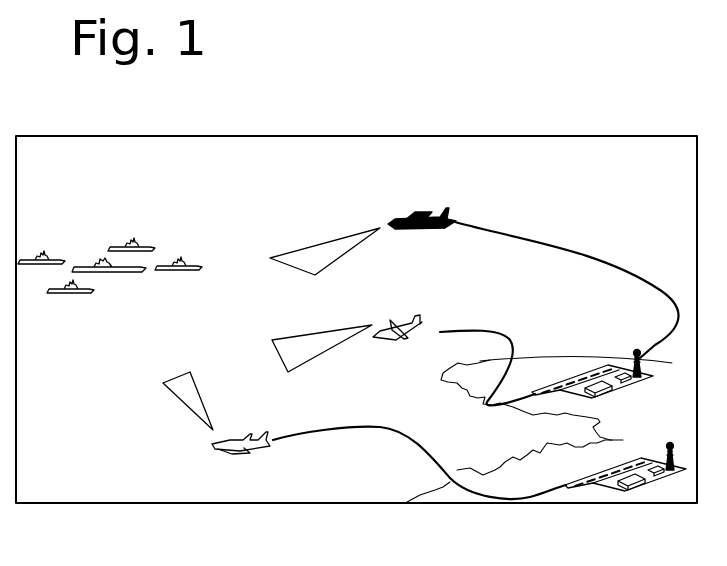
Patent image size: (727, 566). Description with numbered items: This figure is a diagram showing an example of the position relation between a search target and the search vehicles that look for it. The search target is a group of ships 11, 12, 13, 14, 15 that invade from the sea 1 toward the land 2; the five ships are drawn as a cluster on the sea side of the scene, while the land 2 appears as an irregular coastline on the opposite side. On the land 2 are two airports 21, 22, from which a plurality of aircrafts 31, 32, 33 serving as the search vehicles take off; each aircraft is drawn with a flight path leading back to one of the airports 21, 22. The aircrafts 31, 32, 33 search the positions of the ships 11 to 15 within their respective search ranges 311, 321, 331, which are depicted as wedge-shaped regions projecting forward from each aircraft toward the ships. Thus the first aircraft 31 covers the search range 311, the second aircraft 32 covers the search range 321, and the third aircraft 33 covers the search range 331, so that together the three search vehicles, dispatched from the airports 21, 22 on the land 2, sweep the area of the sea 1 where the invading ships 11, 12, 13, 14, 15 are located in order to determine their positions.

The sea 1 is at (293, 497).
The land 2 is at (450, 497).
The ship 11 is at (128, 274).
The ship 12 is at (150, 246).
The ship 13 is at (192, 273).
The ship 14 is at (80, 294).
The ship 15 is at (61, 261).
The airport 21 is at (604, 491).
The airport 22 is at (566, 380).
The aircraft 31 is at (218, 453).
The aircraft 32 is at (389, 342).
The aircraft 33 is at (440, 213).
The search range 311 is at (178, 395).
The search range 321 is at (283, 342).
The search range 331 is at (346, 240).